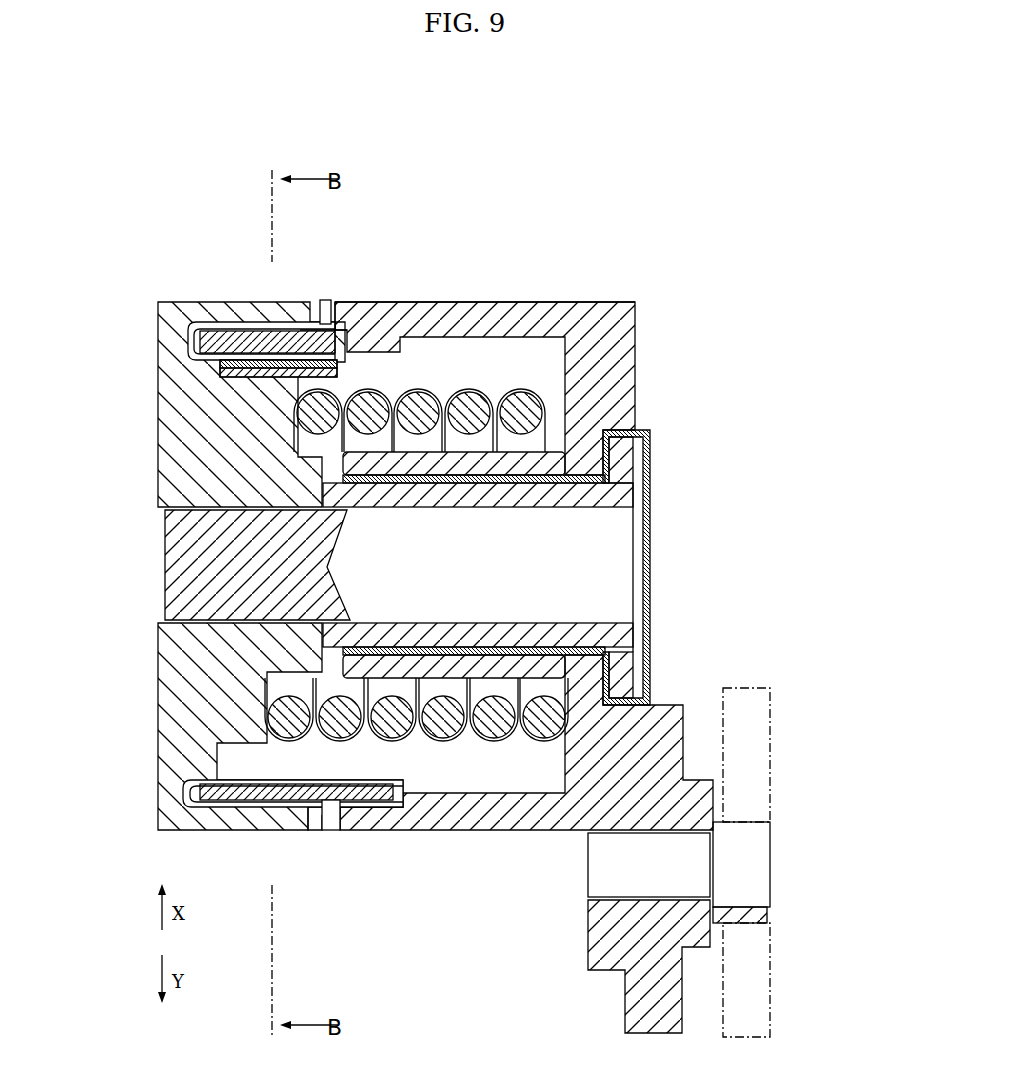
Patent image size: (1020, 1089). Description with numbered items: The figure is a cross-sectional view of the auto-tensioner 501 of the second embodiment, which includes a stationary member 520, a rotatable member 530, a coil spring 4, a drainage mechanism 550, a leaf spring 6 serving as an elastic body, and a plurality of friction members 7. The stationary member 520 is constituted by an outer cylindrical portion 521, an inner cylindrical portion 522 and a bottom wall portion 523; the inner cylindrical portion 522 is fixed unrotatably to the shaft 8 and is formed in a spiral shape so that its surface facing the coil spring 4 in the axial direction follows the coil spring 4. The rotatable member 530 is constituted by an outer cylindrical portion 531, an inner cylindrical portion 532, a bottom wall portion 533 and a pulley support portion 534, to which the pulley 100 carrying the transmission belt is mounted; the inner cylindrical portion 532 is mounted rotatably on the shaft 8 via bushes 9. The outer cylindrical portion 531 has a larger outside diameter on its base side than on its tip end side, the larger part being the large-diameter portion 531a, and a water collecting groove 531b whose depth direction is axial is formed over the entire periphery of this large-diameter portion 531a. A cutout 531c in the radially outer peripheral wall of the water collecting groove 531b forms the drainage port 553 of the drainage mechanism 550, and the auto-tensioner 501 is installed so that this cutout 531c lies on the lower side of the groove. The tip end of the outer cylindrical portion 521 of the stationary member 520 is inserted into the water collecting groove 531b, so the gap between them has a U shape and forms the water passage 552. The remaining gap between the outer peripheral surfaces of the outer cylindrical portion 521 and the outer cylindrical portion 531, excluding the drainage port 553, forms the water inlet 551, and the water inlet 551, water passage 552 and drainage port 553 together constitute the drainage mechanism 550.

The auto-tensioner 501 is at (458, 562).
The stationary member 520 is at (245, 513).
The outer cylindrical portion 521 is at (296, 517).
The inner cylindrical portion 522 is at (158, 396).
The bottom wall portion 523 is at (185, 375).
The friction member 7 is at (286, 322).
The leaf spring 6 is at (300, 384).
The shaft 8 is at (176, 568).
The bush 9 is at (407, 487).
The coil spring 4 is at (492, 722).
The rotatable member 530 is at (546, 634).
The outer cylindrical portion 531 is at (526, 634).
The large-diameter portion 531a is at (500, 302).
The water collecting groove 531b is at (346, 304).
The cutout 531c is at (310, 832).
The inner cylindrical portion 532 is at (548, 410).
The bottom wall portion 533 is at (615, 380).
The pulley support portion 534 is at (658, 728).
The drainage mechanism 550 is at (365, 576).
The water inlet 551 is at (328, 294).
The water passage 552 is at (350, 329).
The drainage port 553 is at (335, 845).
The pulley 100 is at (746, 700).